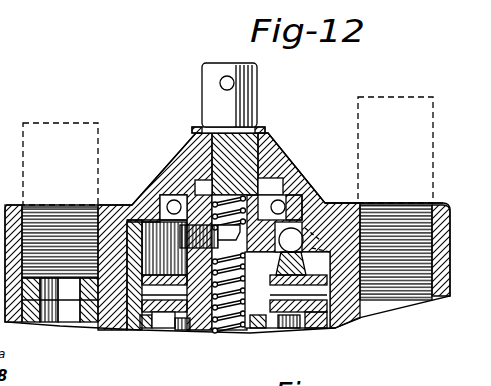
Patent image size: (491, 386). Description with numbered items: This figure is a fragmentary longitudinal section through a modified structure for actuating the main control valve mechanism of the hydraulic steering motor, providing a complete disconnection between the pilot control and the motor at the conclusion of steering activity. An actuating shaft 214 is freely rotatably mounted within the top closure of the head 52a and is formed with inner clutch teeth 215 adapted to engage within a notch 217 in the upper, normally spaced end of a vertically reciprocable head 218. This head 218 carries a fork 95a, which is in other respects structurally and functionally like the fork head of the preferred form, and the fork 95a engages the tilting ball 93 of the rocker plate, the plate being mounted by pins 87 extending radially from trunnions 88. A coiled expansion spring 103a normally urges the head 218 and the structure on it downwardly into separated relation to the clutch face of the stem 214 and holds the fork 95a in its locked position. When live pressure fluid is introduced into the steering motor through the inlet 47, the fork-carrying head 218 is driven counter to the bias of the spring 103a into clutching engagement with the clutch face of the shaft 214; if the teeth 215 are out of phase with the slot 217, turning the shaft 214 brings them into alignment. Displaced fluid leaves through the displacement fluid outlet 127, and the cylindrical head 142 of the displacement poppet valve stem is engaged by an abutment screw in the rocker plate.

The displacement fluid outlet 127 is at (22, 227).
The vertically reciprocable head 218 is at (195, 258).
The actuating shaft 214 is at (265, 157).
The head 52a is at (316, 197).
The tilting ball 93 is at (356, 190).
The fork 95a is at (352, 195).
The inlet 47 is at (432, 203).
The clutch teeth 215 is at (240, 236).
The notch 217 is at (242, 247).
The trunnions 88 is at (150, 316).
The pins 87 is at (170, 313).
The cylindrical head 142 is at (178, 330).
The coiled expansion spring 103a is at (233, 320).